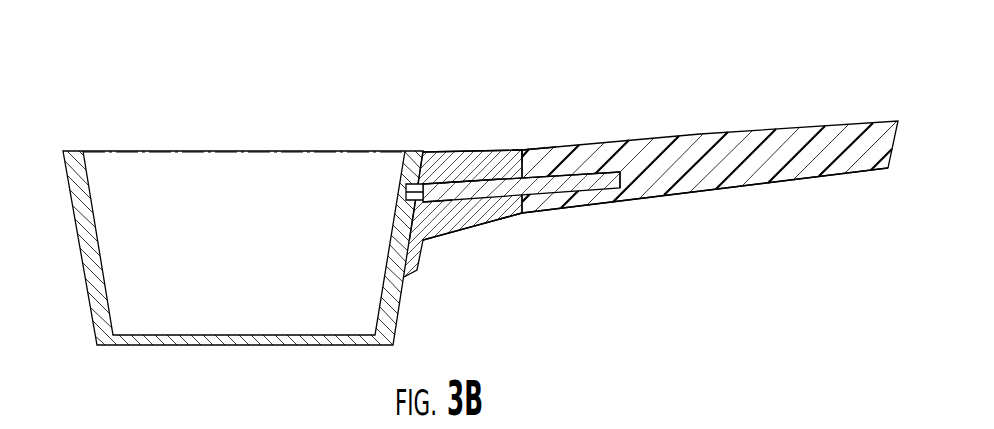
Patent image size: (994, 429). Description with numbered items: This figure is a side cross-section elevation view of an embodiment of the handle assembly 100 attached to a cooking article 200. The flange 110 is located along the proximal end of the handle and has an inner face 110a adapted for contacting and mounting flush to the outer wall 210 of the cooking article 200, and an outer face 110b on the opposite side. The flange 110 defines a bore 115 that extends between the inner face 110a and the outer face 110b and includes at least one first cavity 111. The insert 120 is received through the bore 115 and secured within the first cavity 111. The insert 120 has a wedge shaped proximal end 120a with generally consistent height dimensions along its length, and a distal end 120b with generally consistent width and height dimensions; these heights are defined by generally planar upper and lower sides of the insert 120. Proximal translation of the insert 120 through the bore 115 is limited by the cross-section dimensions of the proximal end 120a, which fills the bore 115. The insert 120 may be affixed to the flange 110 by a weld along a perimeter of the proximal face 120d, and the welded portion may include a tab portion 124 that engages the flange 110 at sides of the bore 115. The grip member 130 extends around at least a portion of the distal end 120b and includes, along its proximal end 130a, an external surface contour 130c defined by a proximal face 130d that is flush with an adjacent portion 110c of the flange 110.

The cooking article 200 is at (300, 147).
The handle assembly 100 is at (608, 189).
The flange 110 is at (482, 193).
The inner face 110a is at (407, 163).
The outer face 110b is at (553, 150).
The adjacent portion 110c is at (522, 214).
The first cavity 111 is at (481, 226).
The outer wall 210 is at (437, 152).
The bore 115 is at (471, 188).
The insert 120 is at (504, 162).
The proximal end 120a is at (481, 180).
The distal end 120b is at (601, 175).
The proximal face 120d is at (427, 207).
The tab portion 124 is at (418, 188).
The grip member 130 is at (687, 215).
The proximal end 130a is at (555, 213).
The external surface contour 130c is at (515, 150).
The proximal face 130d is at (508, 217).